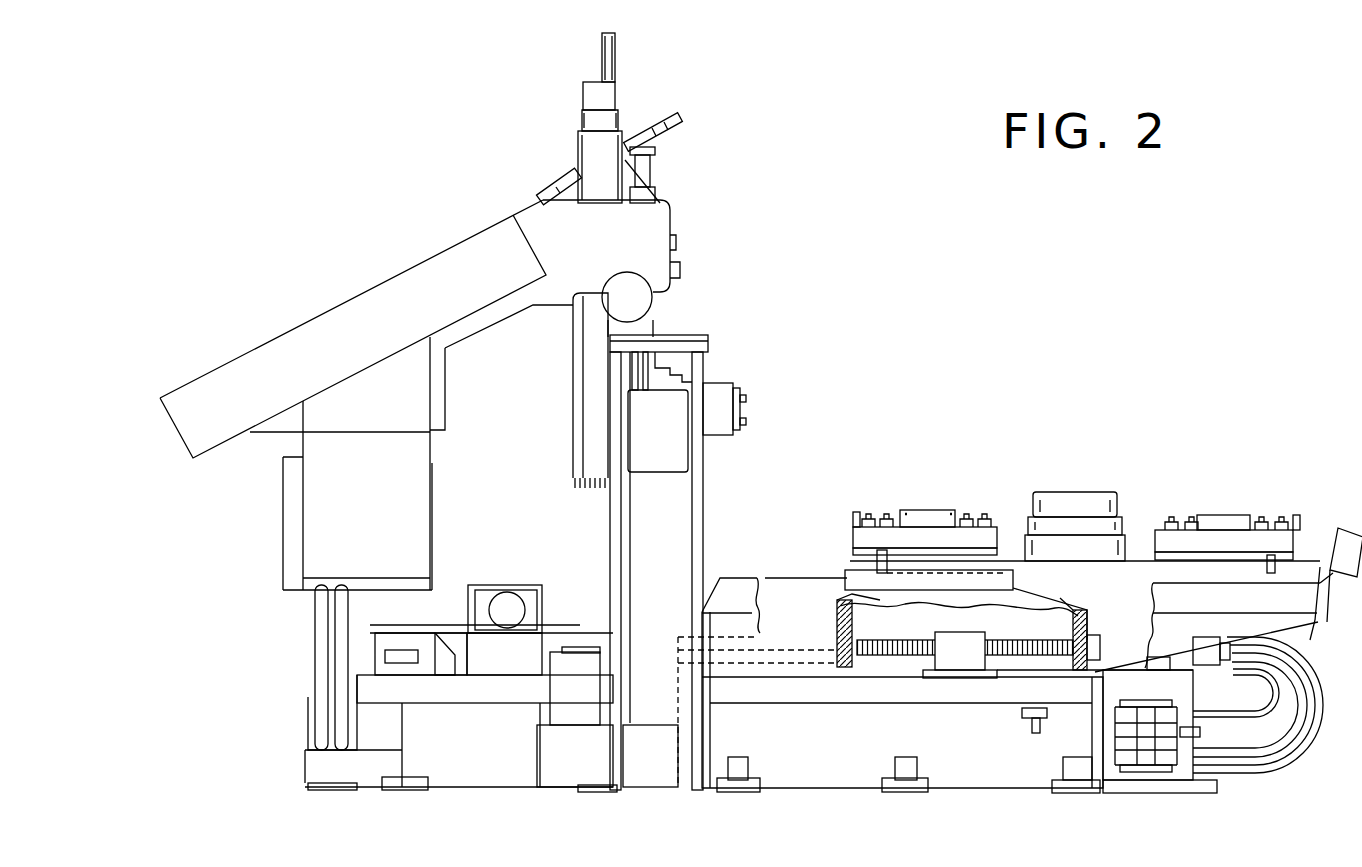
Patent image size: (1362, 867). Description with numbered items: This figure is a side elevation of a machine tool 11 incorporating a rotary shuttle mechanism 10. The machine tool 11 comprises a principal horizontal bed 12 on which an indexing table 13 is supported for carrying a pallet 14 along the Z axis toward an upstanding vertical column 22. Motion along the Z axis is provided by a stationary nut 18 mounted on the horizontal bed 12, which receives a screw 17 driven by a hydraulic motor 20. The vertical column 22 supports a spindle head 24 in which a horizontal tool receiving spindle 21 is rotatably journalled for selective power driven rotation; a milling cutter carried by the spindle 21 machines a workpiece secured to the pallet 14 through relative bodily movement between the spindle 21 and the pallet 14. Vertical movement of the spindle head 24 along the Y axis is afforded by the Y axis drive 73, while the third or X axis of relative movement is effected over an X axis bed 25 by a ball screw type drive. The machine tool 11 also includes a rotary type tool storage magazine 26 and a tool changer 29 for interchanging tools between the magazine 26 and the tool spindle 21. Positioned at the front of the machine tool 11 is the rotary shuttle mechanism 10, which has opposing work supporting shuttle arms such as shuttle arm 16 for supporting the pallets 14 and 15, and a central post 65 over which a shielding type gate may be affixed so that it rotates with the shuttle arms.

The rotary shuttle mechanism 10 is at (1088, 488).
The machine tool 11 is at (682, 217).
The principal horizontal bed 12 is at (805, 690).
The indexing table 13 is at (852, 568).
The pallet 14 is at (968, 517).
The pallet 15 is at (1185, 520).
The shuttle arm 16 is at (1220, 570).
The screw 17 is at (908, 652).
The stationary nut 18 is at (965, 658).
The hydraulic motor 20 is at (1208, 638).
The tool receiving spindle 21 is at (748, 404).
The vertical column 22 is at (541, 518).
The spindle head 24 is at (720, 385).
The X axis bed 25 is at (482, 697).
The tool storage magazine 26 is at (343, 310).
The tool changer 29 is at (665, 128).
The central post 65 is at (1173, 692).
The Y axis drive 73 is at (590, 153).